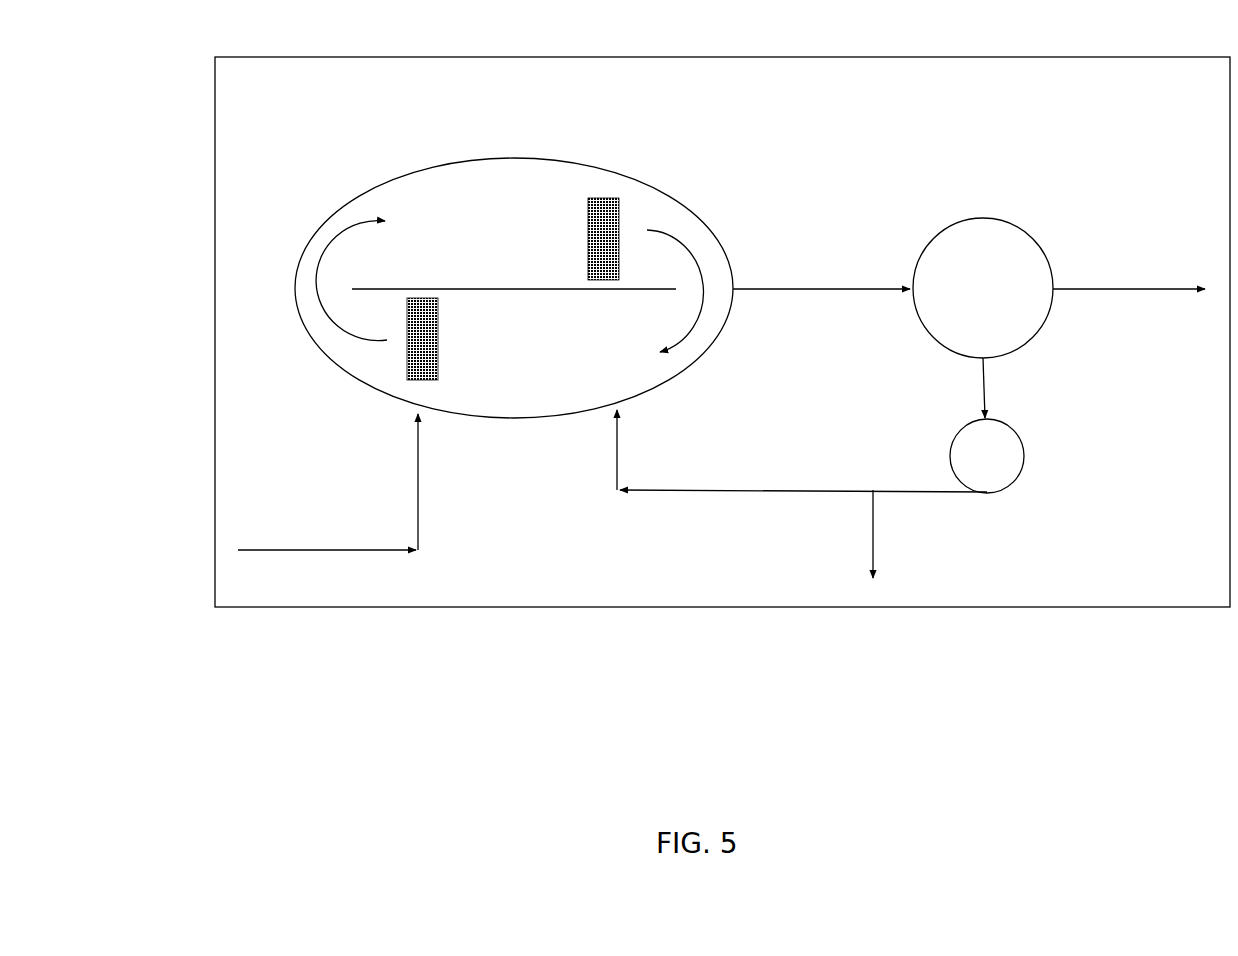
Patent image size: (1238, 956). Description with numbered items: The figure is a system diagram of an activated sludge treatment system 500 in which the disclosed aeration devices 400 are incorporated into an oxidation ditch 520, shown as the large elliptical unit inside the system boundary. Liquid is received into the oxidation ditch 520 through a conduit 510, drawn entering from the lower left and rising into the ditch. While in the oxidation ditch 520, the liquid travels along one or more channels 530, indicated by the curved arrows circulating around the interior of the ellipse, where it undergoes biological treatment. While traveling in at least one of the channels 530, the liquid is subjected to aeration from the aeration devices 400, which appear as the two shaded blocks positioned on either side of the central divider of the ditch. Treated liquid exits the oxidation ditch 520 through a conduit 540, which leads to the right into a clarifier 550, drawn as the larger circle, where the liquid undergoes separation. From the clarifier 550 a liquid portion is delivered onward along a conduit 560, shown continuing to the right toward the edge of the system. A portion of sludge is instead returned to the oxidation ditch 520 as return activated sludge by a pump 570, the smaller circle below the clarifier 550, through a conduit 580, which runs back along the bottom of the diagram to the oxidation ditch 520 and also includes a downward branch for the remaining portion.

The activated sludge treatment system 500 is at (208, 142).
The oxidation ditch 520 is at (462, 157).
The channels 530 is at (345, 318).
The aeration devices 400 is at (588, 250).
The conduit 510 is at (416, 508).
The conduit 540 is at (877, 288).
The clarifier 550 is at (983, 288).
The conduit 560 is at (1158, 288).
The pump 570 is at (1025, 456).
The conduit 580 is at (830, 490).